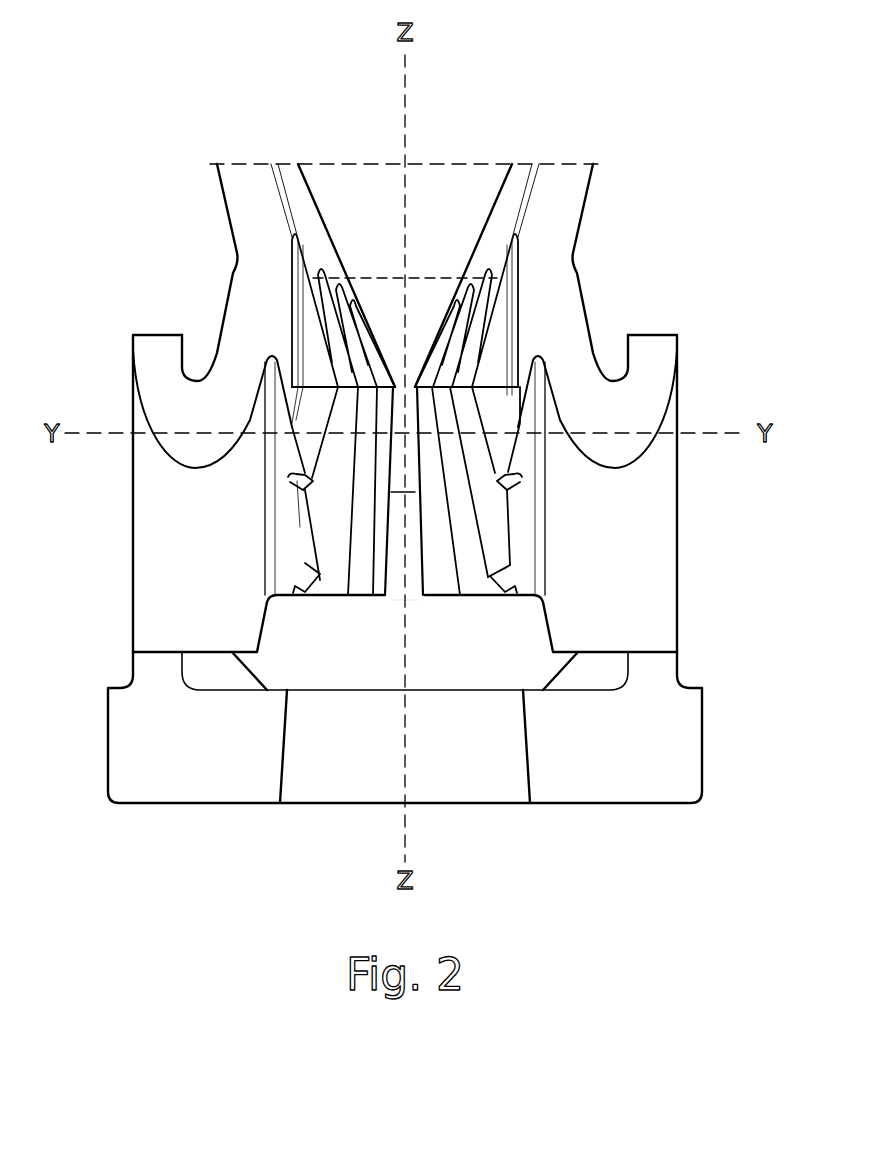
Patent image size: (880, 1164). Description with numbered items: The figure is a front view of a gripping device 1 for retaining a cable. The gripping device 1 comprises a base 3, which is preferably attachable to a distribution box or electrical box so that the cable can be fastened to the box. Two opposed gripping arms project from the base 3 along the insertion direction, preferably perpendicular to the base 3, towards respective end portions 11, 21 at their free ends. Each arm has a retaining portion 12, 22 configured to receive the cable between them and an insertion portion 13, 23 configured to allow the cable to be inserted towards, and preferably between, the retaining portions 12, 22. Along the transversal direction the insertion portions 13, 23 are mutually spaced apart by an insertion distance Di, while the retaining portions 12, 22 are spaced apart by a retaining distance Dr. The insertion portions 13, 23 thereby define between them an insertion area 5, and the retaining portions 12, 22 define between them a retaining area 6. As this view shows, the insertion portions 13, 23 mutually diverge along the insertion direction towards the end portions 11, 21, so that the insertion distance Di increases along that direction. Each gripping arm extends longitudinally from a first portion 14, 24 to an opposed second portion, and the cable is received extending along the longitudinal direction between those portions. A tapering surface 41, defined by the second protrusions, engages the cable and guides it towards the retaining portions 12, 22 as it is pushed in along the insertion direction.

The gripping device 1 is at (231, 128).
The base 3 is at (587, 783).
The insertion area 5 is at (463, 192).
The retaining area 6 is at (392, 591).
The end portion 11 is at (258, 172).
The retaining portion 12 is at (303, 530).
The insertion portion 13 is at (302, 339).
The first portion 14 is at (292, 412).
The end portion 21 is at (557, 171).
The retaining portion 22 is at (490, 508).
The insertion portion 23 is at (487, 320).
The first portion 24 is at (505, 396).
The tapering surface 41 is at (307, 212).
The insertion distance Di is at (313, 280).
The retaining distance Dr is at (407, 492).